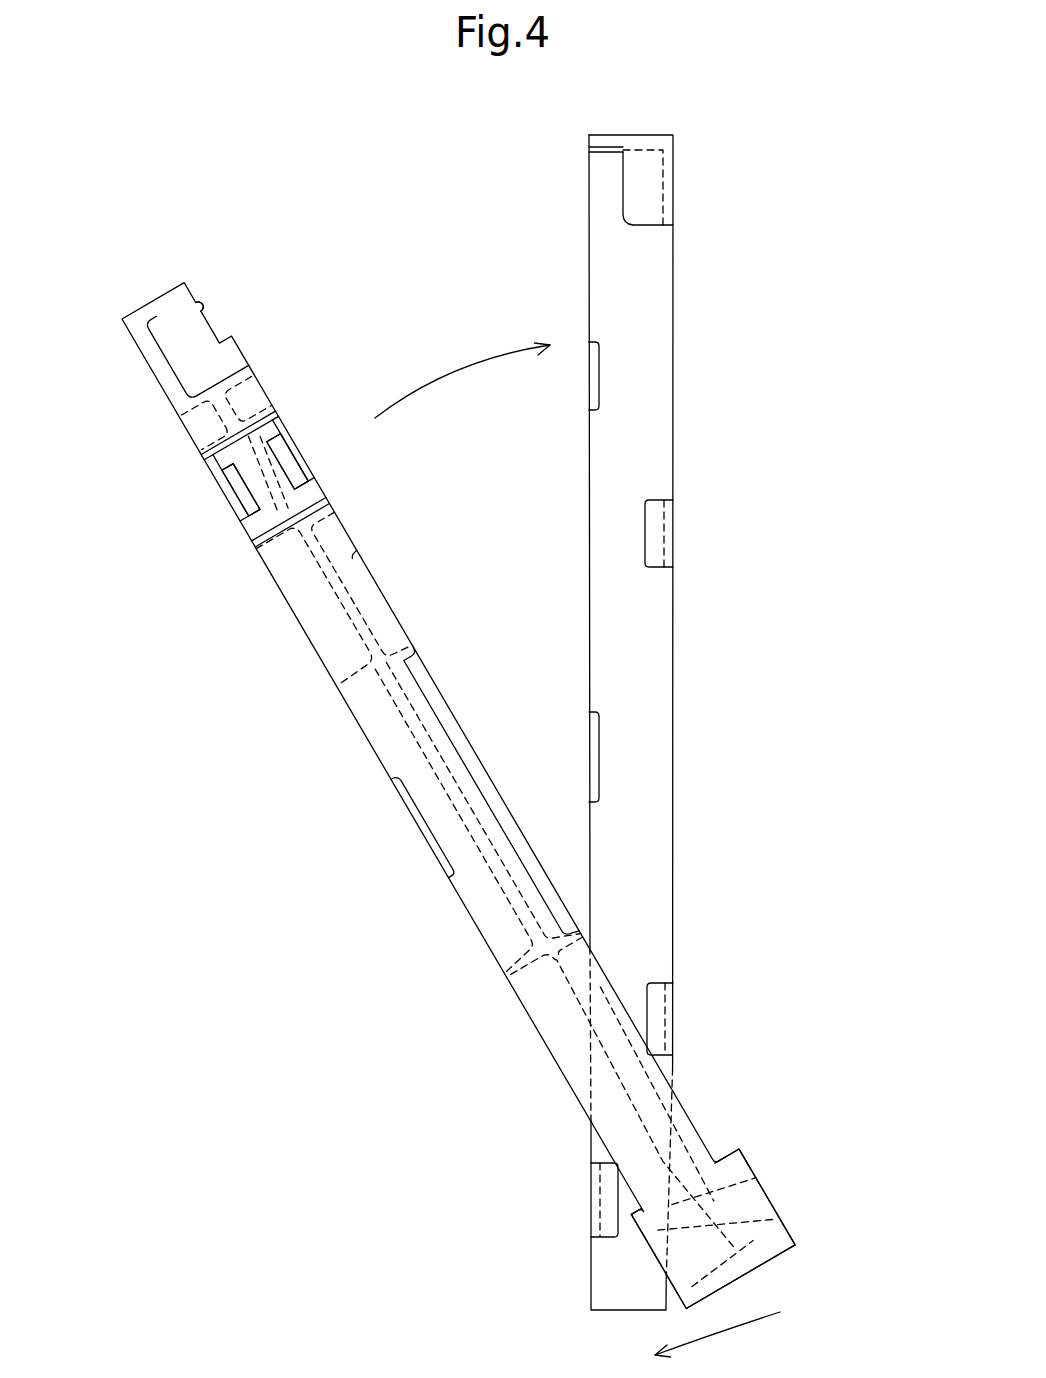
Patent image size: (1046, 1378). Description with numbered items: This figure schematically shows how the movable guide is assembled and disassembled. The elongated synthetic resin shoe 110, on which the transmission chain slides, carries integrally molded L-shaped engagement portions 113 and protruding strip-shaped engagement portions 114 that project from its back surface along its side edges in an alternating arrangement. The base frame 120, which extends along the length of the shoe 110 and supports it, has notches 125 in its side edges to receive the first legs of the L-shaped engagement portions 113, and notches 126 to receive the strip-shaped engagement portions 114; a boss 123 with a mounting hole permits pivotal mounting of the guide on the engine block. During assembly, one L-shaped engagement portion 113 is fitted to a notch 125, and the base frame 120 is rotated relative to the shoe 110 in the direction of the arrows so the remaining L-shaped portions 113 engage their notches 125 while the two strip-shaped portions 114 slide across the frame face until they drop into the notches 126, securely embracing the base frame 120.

The shoe 110 is at (690, 683).
The L-shaped engagement portion 113 is at (638, 193).
The strip-shaped engagement portion 114 is at (592, 398).
The base frame 120 is at (293, 617).
The boss 123 is at (777, 1202).
The notch 125 is at (195, 311).
The notch 126 is at (425, 835).